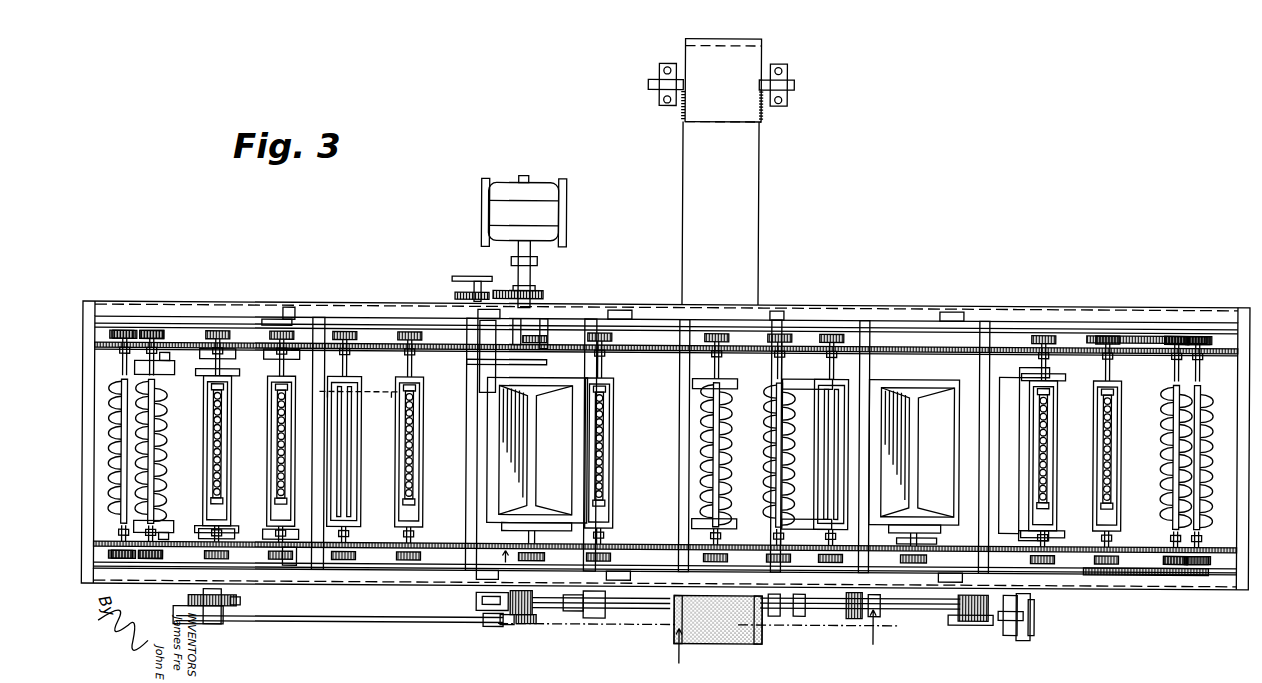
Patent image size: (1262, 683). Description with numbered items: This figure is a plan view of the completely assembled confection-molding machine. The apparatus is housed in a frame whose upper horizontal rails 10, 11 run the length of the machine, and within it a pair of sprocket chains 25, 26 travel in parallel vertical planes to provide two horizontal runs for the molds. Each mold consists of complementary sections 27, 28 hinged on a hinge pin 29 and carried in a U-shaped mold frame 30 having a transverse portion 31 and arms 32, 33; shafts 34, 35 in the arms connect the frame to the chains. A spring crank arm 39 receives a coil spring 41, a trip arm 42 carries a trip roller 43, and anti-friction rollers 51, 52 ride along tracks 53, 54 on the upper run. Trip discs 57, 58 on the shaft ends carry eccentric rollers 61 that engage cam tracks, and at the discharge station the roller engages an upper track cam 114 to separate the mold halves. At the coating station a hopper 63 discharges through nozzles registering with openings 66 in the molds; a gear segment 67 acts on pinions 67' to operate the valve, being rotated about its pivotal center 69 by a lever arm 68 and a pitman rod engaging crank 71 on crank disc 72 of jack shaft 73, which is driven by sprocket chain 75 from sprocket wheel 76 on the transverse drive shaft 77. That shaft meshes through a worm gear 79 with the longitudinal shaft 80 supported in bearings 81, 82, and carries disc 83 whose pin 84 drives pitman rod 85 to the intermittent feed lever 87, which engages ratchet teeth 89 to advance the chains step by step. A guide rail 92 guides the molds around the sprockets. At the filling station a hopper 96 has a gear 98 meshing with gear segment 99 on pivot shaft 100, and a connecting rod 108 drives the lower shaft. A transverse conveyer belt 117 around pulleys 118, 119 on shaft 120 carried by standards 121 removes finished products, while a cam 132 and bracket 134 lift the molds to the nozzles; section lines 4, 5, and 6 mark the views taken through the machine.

The upper horizontal rail 10 is at (920, 300).
The upper horizontal rail 11 is at (405, 580).
The sprocket chain 25 is at (1078, 340).
The sprocket chain 26 is at (1075, 568).
The mold section 27 is at (353, 479).
The mold section 28 is at (420, 467).
The hinge pin 29 is at (350, 446).
The mold frame 30 is at (1021, 443).
The transverse portion 31 is at (427, 435).
The frame arm 32 is at (1025, 374).
The frame arm 33 is at (1025, 525).
The shaft 34 is at (120, 545).
The shaft 35 is at (130, 342).
The spring crank arm 39 is at (172, 376).
The coil spring 41 is at (165, 524).
The trip arm 42 is at (163, 388).
The trip roller 43 is at (168, 506).
The anti-friction roller 51 is at (220, 525).
The anti-friction roller 52 is at (222, 360).
The track 53 is at (298, 518).
The track 54 is at (300, 362).
The trip disc 57 is at (295, 562).
The trip disc 58 is at (290, 306).
The roller 61 is at (272, 318).
The hopper 63 is at (560, 466).
The opening 66 is at (225, 430).
The gear segment 67 is at (491, 370).
The pinion 67' is at (588, 315).
The lever arm 68 is at (484, 265).
The pivotal center 69 is at (490, 358).
The crank 71 is at (476, 279).
The crank disc 72 is at (453, 276).
The jack shaft 73 is at (456, 293).
The sprocket chain 75 is at (512, 285).
The sprocket wheel 76 is at (545, 292).
The transverse drive shaft 77 is at (532, 280).
The worm gear 79 is at (526, 622).
The longitudinal shaft 80 is at (575, 606).
The bearing 81 is at (1010, 615).
The bearing 82 is at (478, 599).
The disc 83 is at (535, 614).
The pin 84 is at (510, 623).
The pitman rod 85 is at (355, 622).
The intermittent feed lever 87 is at (178, 612).
The ratchet teeth 89 is at (242, 600).
The guide rail 92 is at (1205, 565).
The hopper 96 is at (885, 471).
The gear 98 is at (905, 525).
The gear segment 99 is at (940, 528).
The pivot shaft 100 is at (965, 616).
The connecting rod 108 is at (1032, 610).
The upper track cam 114 is at (830, 392).
The conveyer belt 117 is at (740, 228).
The pulley 118 is at (765, 635).
The pulley 119 is at (762, 43).
The shaft 120 is at (790, 79).
The standard 121 is at (785, 96).
The cam 132 is at (856, 615).
The bracket 134 is at (598, 615).
The section line 4- 4 is at (698, 625).
The section line 5 is at (674, 646).
The section line 6 is at (503, 555).